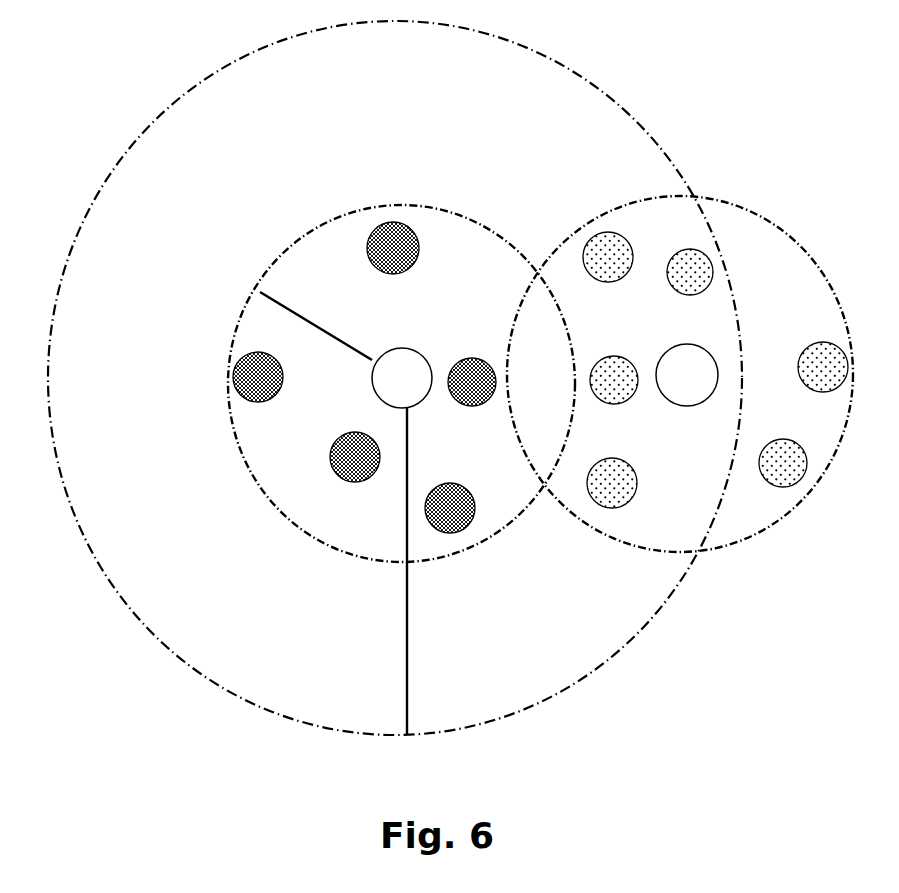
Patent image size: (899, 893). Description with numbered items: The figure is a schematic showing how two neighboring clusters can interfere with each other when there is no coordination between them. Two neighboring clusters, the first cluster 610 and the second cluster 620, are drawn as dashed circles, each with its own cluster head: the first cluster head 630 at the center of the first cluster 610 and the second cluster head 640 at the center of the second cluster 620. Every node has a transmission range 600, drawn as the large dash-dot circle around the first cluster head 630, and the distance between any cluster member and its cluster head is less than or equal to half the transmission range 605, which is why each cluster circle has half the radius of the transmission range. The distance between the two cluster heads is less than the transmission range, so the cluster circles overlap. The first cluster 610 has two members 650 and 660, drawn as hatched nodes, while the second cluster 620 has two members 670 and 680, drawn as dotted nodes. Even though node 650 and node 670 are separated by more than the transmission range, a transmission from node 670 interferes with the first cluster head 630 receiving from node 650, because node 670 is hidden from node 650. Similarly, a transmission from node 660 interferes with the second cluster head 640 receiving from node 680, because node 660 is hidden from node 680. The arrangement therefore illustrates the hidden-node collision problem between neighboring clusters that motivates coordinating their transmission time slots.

The transmission range R 600 is at (433, 695).
The distance R/2 605 is at (300, 262).
The cluster C1 610 is at (383, 202).
The cluster C2 620 is at (765, 215).
The cluster head CH1 630 is at (418, 398).
The cluster head CH2 640 is at (670, 402).
The member node of cluster C1 650 is at (260, 403).
The member node of cluster C1 660 is at (466, 355).
The member node of cluster C2 670 is at (612, 355).
The member node of cluster C2 680 is at (817, 343).